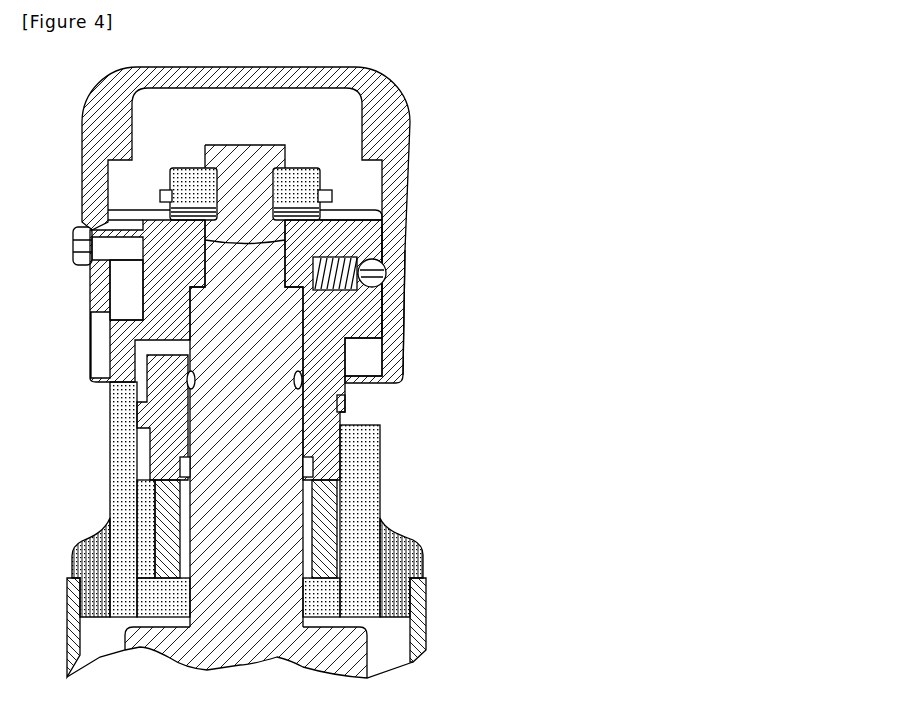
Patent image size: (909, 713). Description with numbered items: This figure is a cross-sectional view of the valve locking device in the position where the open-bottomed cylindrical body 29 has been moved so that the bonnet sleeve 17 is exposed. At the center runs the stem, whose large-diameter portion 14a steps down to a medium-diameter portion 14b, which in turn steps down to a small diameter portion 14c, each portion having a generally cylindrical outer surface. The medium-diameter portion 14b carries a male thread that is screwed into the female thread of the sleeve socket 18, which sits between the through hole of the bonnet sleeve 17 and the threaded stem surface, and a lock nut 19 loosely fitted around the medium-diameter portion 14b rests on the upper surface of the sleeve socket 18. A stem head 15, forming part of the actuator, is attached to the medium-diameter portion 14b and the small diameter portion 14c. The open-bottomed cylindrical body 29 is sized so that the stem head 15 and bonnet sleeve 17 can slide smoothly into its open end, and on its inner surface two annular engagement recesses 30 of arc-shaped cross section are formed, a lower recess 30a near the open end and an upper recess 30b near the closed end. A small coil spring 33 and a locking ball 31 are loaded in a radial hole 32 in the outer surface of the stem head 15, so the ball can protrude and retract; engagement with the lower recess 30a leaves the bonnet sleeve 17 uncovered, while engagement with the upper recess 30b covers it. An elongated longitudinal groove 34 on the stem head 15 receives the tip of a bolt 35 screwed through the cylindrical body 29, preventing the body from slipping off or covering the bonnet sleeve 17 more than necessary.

The large-diameter portion 14a is at (350, 657).
The medium-diameter portion 14b is at (337, 555).
The small diameter portion 14c is at (370, 68).
The stem head 15 is at (110, 250).
The bonnet sleeve 17 is at (337, 398).
The sleeve socket 18 is at (340, 513).
The lock nut 19 is at (367, 338).
The open-bottomed cylindrical body 29 is at (248, 190).
The engagement recess 30 is at (110, 233).
The lower recess 30a is at (392, 249).
The upper recess 30b is at (345, 213).
The locking ball 31 is at (386, 273).
The hole 32 is at (405, 283).
The small coil spring 33 is at (333, 253).
The groove 34 is at (128, 305).
The bolt 35 is at (405, 283).